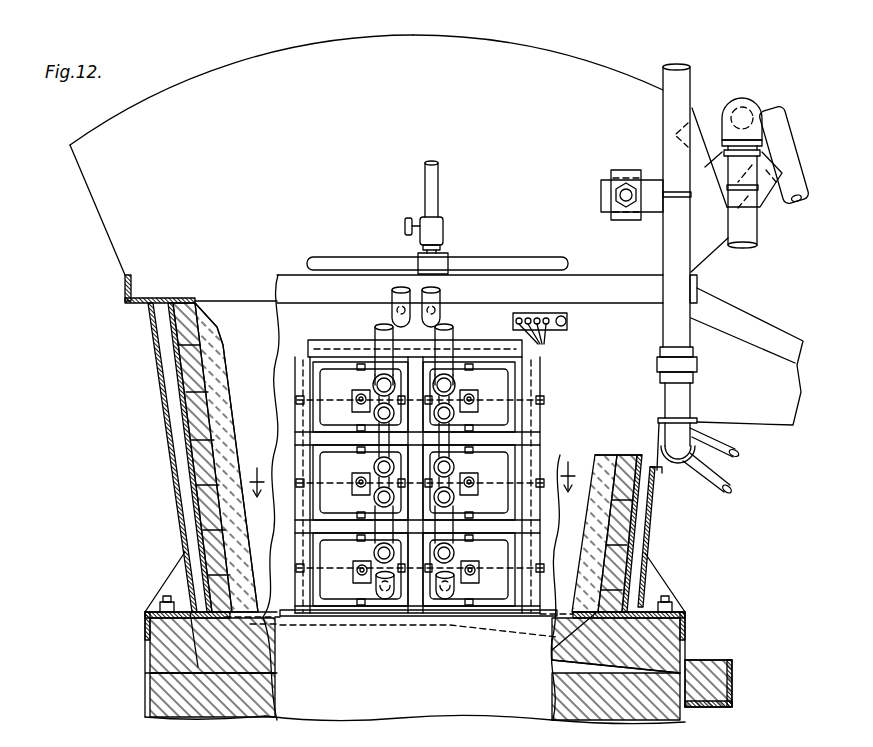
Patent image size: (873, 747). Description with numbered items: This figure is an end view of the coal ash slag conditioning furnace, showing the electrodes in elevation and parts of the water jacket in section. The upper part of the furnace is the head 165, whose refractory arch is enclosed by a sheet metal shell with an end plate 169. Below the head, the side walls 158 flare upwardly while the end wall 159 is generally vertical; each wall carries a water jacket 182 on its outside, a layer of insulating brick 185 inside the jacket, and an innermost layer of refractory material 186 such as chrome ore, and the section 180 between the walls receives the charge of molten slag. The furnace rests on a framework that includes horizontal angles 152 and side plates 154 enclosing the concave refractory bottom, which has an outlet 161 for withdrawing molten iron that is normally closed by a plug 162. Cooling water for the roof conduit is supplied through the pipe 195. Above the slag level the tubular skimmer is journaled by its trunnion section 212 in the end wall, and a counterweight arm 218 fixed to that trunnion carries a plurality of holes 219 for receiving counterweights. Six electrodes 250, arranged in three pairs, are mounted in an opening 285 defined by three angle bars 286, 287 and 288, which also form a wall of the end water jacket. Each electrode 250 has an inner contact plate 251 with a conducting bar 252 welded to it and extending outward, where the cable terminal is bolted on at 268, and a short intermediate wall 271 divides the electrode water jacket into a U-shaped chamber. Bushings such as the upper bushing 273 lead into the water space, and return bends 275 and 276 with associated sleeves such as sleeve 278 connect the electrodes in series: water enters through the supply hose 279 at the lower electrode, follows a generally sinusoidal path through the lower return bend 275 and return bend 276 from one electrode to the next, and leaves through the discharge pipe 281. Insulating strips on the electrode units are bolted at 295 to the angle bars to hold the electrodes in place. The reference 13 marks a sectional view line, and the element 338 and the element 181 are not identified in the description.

The furnace head 165 is at (215, 68).
The end plate 169 is at (527, 63).
The cooling water supply pipe 195 is at (343, 258).
The pipe connectors 181 is at (410, 288).
The discharge pipe 281 is at (378, 326).
The trunnion section 212 is at (561, 316).
The counterweight arm 218 is at (568, 321).
The holes 219 is at (547, 342).
The angle bar 287 is at (308, 343).
The upper bushing 273 is at (360, 342).
The intermediate wall 271 is at (420, 350).
The opening 285 is at (480, 342).
The angle bar 288 is at (540, 406).
The end wall 159 is at (282, 430).
The bolt 268 is at (354, 398).
The sleeve 278 is at (452, 408).
The bolt 295 is at (470, 428).
The return bend 276 is at (377, 452).
The lower return bend 275 is at (378, 540).
The water supply pipe or hose 279 is at (390, 594).
The refractory material layer 186 is at (226, 400).
The insulating brick 185 is at (190, 368).
The water jacket 182 is at (172, 396).
The side wall 158 is at (170, 453).
The section line 13 is at (418, 470).
The angle bar 286 is at (300, 508).
The charge-receiving section 180 is at (262, 541).
The horizontal angle 152 is at (148, 632).
The side plate 154 is at (148, 680).
The outlet 161 is at (650, 600).
The plug 162 is at (684, 625).
The contact plate 251 is at (205, 731).
The conducting bar 252 is at (405, 731).
The electrode 250 is at (493, 733).
The valve assembly 338 is at (750, 232).